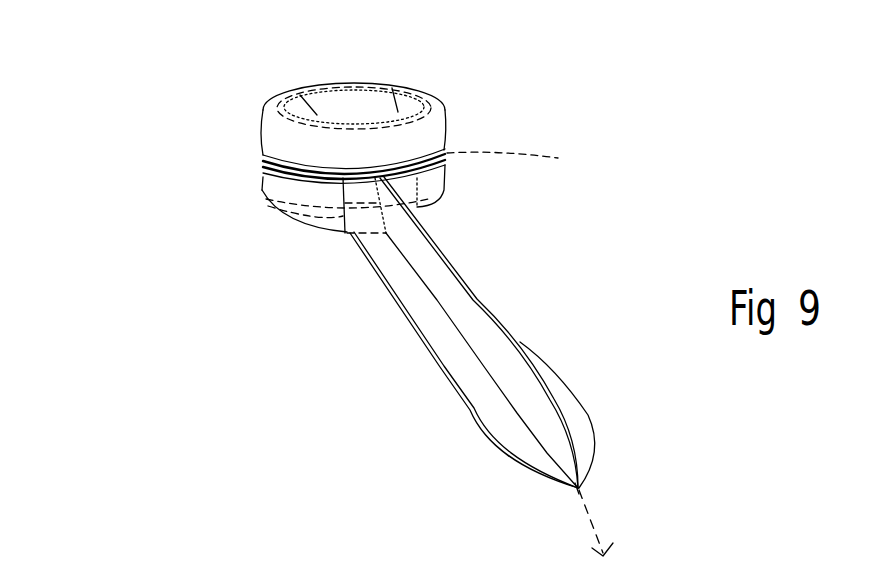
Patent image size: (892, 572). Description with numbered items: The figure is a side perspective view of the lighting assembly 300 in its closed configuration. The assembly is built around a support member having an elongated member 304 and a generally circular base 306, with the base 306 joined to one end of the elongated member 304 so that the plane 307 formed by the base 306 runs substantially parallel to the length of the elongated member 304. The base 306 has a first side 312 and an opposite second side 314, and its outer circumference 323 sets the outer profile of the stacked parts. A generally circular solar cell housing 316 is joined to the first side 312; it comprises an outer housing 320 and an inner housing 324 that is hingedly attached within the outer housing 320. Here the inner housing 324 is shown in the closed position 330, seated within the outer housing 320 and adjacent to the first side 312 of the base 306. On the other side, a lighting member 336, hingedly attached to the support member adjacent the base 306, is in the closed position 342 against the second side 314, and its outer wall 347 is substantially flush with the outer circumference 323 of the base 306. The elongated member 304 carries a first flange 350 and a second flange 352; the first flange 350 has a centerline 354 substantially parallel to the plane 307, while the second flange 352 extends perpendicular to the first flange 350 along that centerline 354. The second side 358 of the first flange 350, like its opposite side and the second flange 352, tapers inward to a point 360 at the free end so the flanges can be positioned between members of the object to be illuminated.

The lighting assembly 300 is at (173, 58).
The elongated member 304 is at (565, 292).
The base 306 is at (263, 172).
The plane 307 is at (530, 157).
The first side 312 is at (250, 155).
The second side 314 is at (258, 177).
The solar cell housing 316 is at (447, 138).
The outer housing 320 is at (445, 118).
The outer circumference 323 is at (263, 163).
The inner housing 324 is at (405, 95).
The closed position 330 is at (473, 82).
The lighting member 336 is at (307, 197).
The closed position 342 is at (223, 260).
The outer wall 347 is at (443, 190).
The first flange 350 is at (575, 422).
The second flange 352 is at (472, 285).
The centerline 354 is at (595, 520).
The second side 358 is at (540, 357).
The point 360 is at (583, 485).